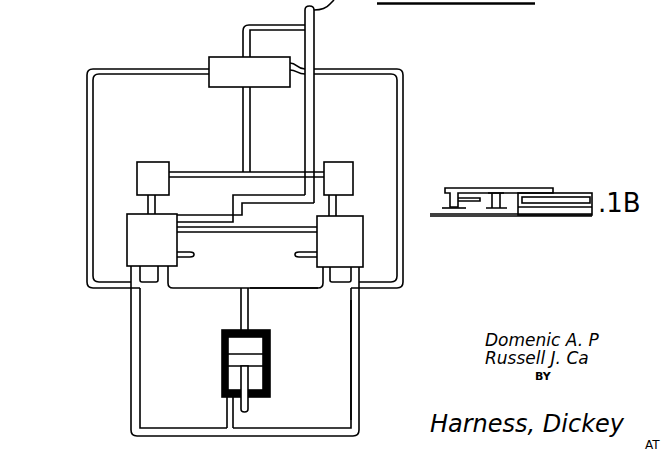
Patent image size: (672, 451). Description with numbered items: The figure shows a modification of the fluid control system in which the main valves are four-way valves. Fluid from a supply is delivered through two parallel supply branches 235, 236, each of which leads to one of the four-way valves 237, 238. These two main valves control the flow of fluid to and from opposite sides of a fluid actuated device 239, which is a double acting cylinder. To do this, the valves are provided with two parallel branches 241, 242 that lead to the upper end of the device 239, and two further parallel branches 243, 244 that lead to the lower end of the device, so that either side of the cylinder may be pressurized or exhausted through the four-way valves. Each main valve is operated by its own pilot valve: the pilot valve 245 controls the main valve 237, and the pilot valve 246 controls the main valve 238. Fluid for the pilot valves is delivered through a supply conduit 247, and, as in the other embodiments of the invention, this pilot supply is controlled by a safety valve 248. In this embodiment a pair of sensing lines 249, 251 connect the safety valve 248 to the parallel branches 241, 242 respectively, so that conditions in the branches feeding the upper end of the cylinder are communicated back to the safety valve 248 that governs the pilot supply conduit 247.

The supply branch 235 is at (215, 208).
The supply branch 236 is at (273, 229).
The four-way valve 237 is at (133, 218).
The four-way valve 238 is at (373, 208).
The fluid actuated device 239 is at (270, 343).
The parallel branch 241 is at (202, 288).
The parallel branch 242 is at (281, 289).
The parallel branch 243 is at (140, 358).
The parallel branch 244 is at (356, 332).
The pilot valve 245 is at (160, 162).
The pilot valve 246 is at (337, 162).
The supply conduit 247 is at (243, 101).
The safety valve 248 is at (222, 60).
The sensing line 249 is at (87, 125).
The sensing line 251 is at (403, 153).